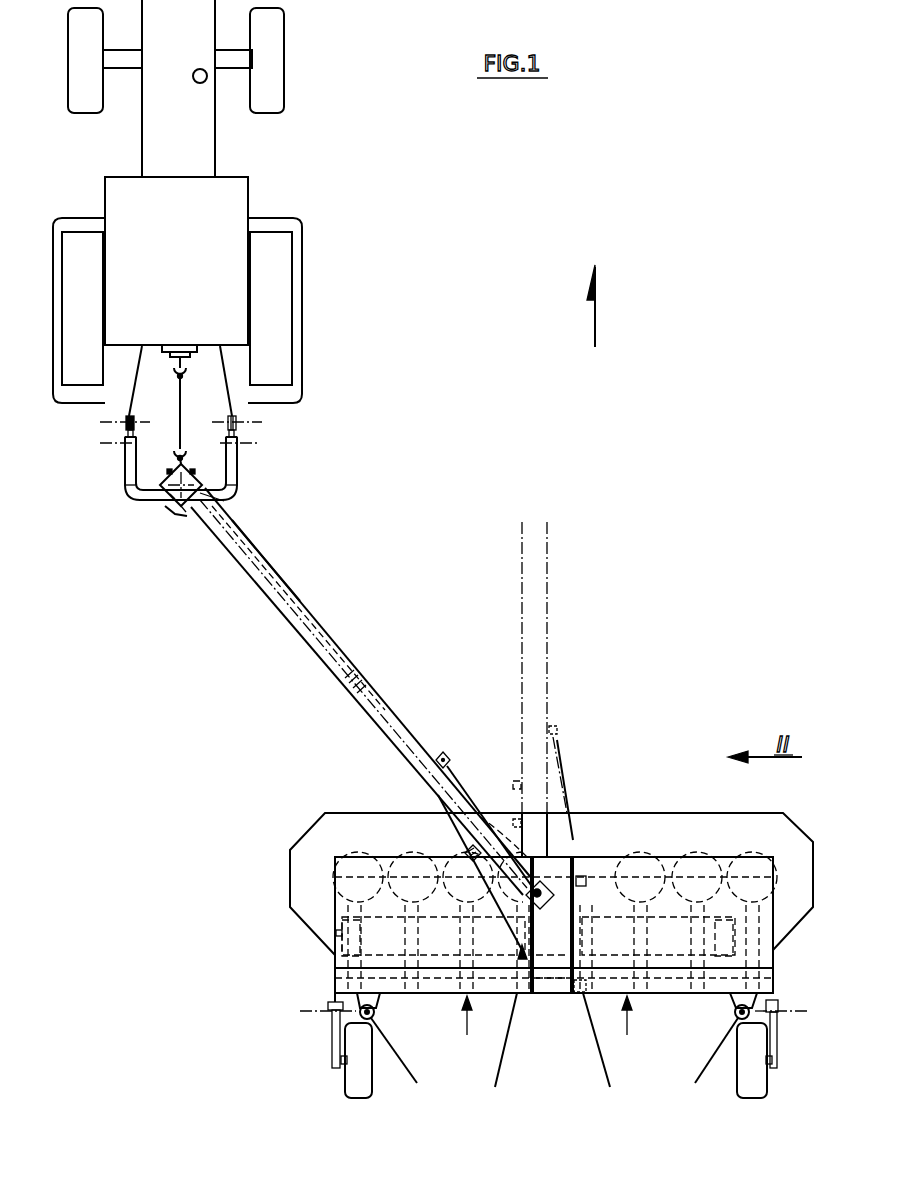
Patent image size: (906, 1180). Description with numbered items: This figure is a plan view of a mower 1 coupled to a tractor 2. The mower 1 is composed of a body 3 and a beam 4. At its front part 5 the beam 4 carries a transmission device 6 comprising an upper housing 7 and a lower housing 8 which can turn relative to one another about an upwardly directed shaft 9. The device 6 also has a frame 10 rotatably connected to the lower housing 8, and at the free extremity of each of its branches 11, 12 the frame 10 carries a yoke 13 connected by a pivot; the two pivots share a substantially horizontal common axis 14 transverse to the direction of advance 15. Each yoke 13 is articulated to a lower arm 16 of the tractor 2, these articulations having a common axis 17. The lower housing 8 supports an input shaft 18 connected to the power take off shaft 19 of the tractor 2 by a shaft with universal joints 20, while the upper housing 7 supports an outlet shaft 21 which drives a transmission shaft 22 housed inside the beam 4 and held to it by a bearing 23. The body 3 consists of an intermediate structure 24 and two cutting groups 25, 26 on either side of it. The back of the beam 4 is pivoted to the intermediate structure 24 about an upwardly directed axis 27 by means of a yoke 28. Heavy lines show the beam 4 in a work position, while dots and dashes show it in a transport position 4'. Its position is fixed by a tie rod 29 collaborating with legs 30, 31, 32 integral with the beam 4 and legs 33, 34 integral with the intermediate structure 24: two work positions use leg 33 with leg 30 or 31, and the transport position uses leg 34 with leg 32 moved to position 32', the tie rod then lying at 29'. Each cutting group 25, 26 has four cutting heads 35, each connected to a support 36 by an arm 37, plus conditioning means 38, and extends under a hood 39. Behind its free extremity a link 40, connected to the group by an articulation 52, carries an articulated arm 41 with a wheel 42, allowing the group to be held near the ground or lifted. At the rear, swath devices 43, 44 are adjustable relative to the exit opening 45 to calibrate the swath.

The mower 1 is at (148, 982).
The tractor 2 is at (237, 212).
The body 3 is at (691, 790).
The beam 4 is at (362, 691).
The carrier boom in alternative position 4' is at (556, 689).
The front part 5 is at (298, 502).
The transmission device 6 is at (166, 513).
The upper housing 7 is at (184, 508).
The lower housing 8 is at (196, 478).
The upwardly directed shaft 9 is at (172, 492).
The frame 10 is at (131, 496).
The branch 11 is at (127, 471).
The branch 12 is at (238, 477).
The yoke 13 is at (124, 425).
The common axis 14 is at (113, 444).
The direction of advance 15 is at (597, 333).
The lower arm 16 is at (135, 400).
The common axis 17 is at (104, 419).
The input shaft 18 is at (176, 463).
The power take off shaft 19 is at (192, 363).
The shaft with universal joints 20 is at (170, 352).
The outlet shaft 21 is at (222, 499).
The transmission shaft 22 is at (273, 588).
The bearing 23 is at (345, 685).
The intermediate structure 24 is at (553, 1000).
The cutting group 25 is at (665, 855).
The cutting group 26 is at (376, 842).
The shaft and axis 27 is at (501, 803).
The yoke 28 is at (557, 908).
The tie rod 29 is at (442, 842).
The adjusting rod in alternative position 29' is at (579, 788).
The leg 30 is at (448, 818).
The leg 31 is at (479, 812).
The leg 32 is at (447, 740).
The position of leg 32 32' is at (576, 716).
The leg 33 is at (516, 994).
The leg 34 is at (586, 880).
The cutting head 35 is at (356, 856).
The support 36 is at (436, 994).
The arm 37 is at (341, 955).
The conditioning means 38 is at (377, 935).
The hood 39 is at (421, 946).
The link 40 is at (332, 1005).
The arm 41 is at (331, 1050).
The wheel 42 is at (357, 1090).
The swath device 43 is at (404, 1062).
The swath device 44 is at (500, 1075).
The exit opening 45 is at (542, 1023).
The articulation 52 is at (795, 1020).